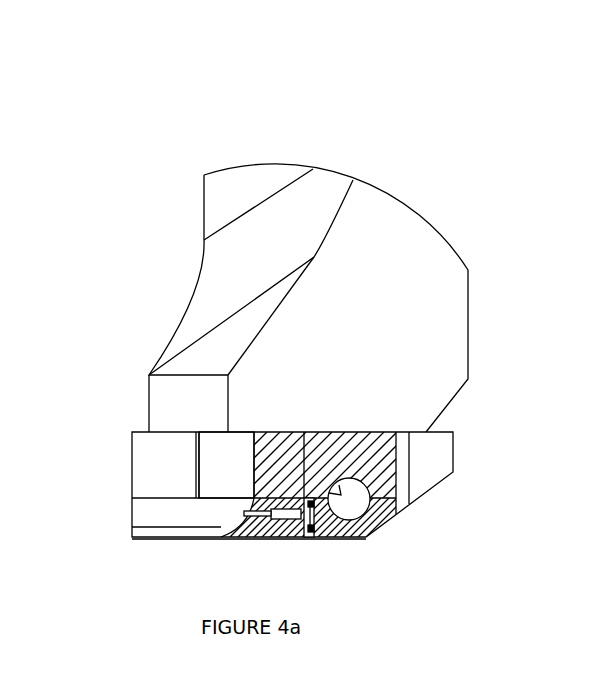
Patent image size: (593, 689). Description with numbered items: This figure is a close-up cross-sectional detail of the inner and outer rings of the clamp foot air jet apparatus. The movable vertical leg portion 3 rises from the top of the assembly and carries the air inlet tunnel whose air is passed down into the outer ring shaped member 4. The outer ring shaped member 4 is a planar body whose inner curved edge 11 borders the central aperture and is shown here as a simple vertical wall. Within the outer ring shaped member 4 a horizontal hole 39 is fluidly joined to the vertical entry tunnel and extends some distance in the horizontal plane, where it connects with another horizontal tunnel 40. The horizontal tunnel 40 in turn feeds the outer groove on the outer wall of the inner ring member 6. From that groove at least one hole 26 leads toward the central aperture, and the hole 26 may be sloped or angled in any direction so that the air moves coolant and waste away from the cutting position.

The vertical leg portion 3 is at (326, 279).
The outer ring shaped member 4 is at (344, 426).
The inner curved edge 11 is at (147, 427).
The horizontal hole 39 is at (417, 508).
The horizontal tunnel 40 is at (376, 505).
The inner ring member 6 is at (298, 543).
The hole 26 is at (309, 564).